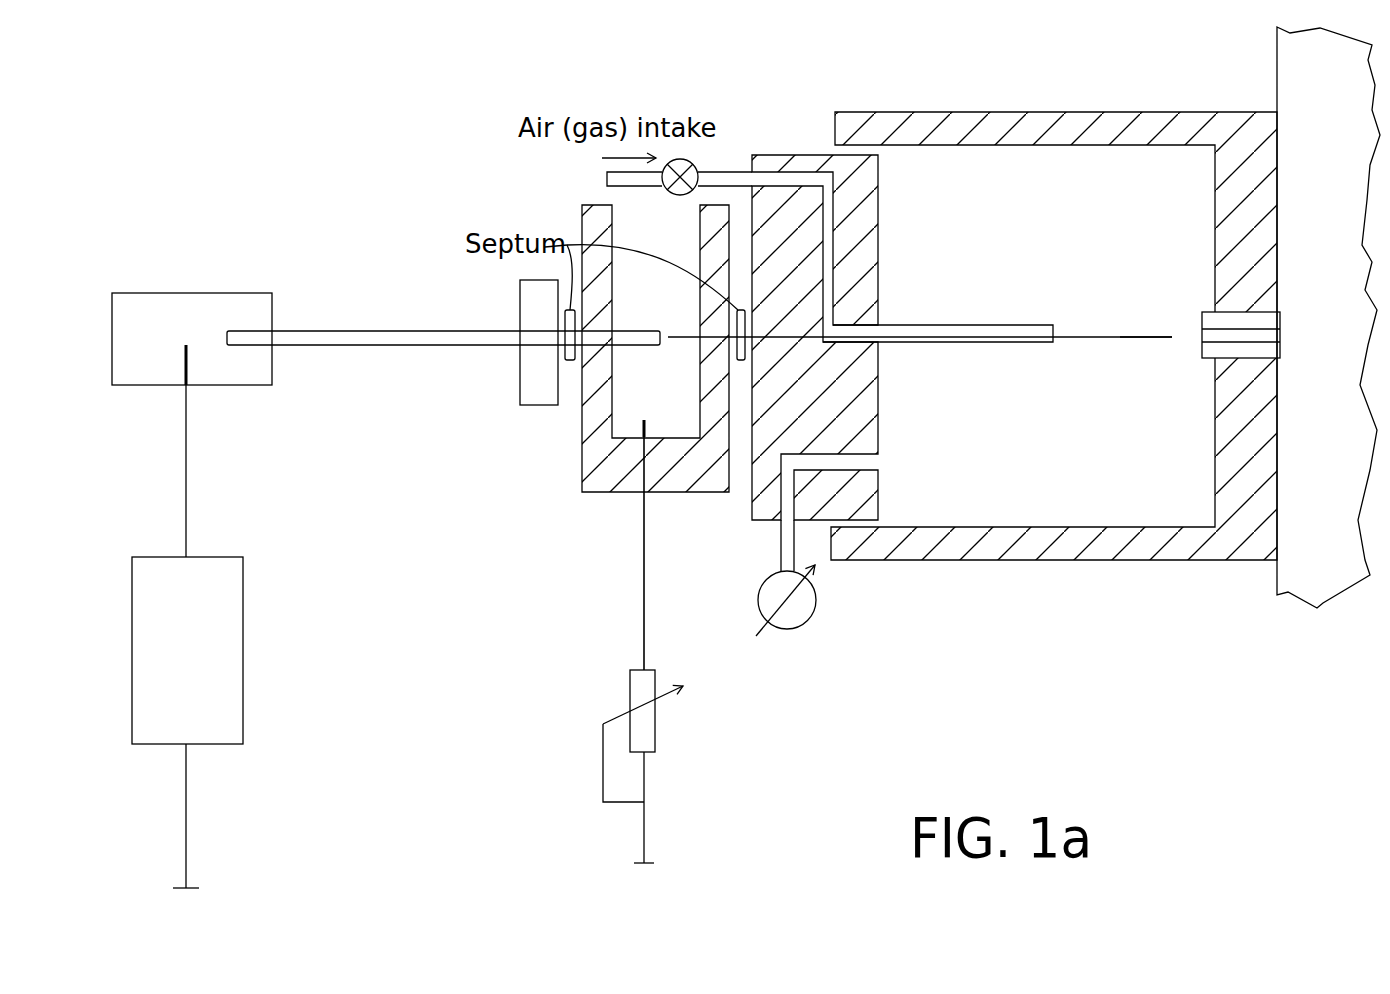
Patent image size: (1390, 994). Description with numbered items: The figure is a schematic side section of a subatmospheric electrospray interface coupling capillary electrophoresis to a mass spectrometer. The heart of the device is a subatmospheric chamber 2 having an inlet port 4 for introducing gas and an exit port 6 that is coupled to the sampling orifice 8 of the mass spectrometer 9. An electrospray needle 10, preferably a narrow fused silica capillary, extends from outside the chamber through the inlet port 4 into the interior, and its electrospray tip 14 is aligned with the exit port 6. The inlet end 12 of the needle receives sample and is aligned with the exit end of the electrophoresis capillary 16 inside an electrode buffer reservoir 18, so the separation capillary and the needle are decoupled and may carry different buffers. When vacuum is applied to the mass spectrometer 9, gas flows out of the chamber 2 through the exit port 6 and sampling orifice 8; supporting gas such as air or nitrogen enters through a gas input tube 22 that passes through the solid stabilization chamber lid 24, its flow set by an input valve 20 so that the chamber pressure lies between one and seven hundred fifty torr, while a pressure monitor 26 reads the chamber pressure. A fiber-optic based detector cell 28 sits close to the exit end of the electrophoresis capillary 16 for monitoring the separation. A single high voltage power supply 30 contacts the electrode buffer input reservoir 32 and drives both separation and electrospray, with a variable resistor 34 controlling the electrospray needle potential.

The subatmospheric chamber 2 is at (1055, 510).
The inlet port 4 is at (880, 325).
The exit port 6 is at (1190, 330).
The sampling orifice 8 is at (1280, 355).
The mass spectrometer 9 is at (1341, 286).
The electrospray needle 10 is at (1147, 330).
The inlet end 12 is at (668, 338).
The electrospray tip 14 is at (1175, 342).
The electrophoresis capillary 16 is at (345, 330).
The electrode buffer reservoir 18 is at (623, 402).
The input valve 20 is at (697, 162).
The gas input tube 22 is at (968, 343).
The stabilization chamber lid 24 is at (793, 153).
The pressure monitor 26 is at (814, 613).
The fiber-optic based detector cell 28 is at (521, 373).
The high voltage power supply 30 is at (243, 665).
The electrode buffer input reservoir 32 is at (172, 292).
The variable resistor 34 is at (656, 734).